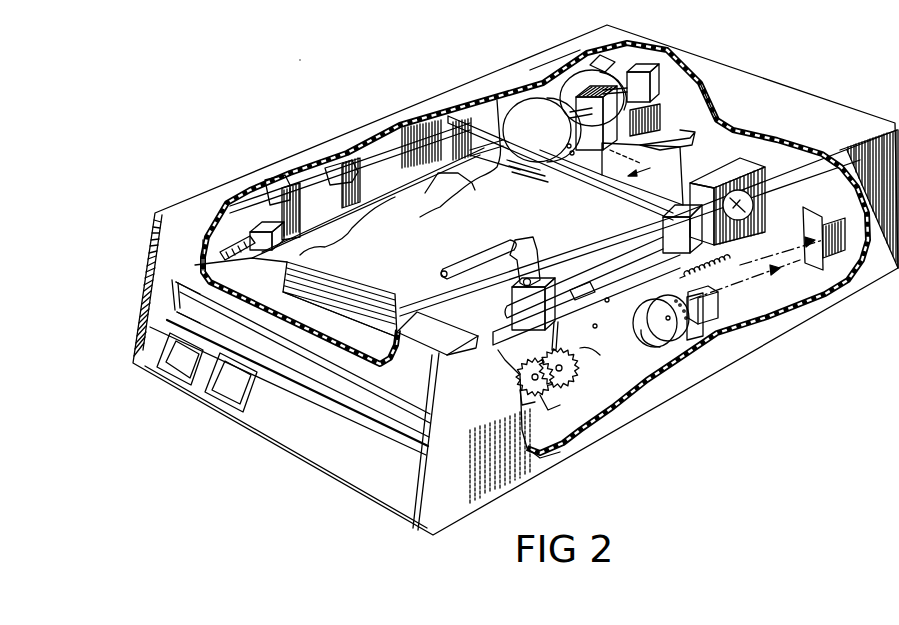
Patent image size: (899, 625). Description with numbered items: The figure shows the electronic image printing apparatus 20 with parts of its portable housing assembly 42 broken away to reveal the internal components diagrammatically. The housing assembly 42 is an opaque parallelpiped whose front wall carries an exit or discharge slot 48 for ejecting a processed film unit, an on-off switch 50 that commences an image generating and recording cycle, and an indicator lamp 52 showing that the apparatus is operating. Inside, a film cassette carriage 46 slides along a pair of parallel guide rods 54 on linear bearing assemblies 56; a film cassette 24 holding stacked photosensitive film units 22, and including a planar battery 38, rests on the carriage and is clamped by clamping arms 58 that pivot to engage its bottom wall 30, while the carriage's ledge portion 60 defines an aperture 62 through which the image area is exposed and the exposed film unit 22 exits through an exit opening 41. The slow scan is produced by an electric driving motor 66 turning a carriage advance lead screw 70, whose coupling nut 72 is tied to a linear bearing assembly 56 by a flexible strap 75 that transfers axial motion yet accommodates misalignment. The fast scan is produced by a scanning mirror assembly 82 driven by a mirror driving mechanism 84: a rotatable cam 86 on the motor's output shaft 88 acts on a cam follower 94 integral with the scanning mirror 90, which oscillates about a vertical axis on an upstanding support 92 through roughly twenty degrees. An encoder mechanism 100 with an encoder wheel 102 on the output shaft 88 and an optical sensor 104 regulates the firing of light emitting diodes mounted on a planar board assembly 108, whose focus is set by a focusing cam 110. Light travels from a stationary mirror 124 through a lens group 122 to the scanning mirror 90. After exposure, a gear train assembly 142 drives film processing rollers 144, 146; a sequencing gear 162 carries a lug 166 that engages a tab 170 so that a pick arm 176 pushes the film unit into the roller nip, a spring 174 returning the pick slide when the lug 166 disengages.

The electronic image printing apparatus 20 is at (318, 72).
The photosensitive film units 22 is at (407, 219).
The film cassette 24 is at (391, 276).
The bottom wall 30 is at (430, 305).
The battery 38 is at (492, 255).
The exit opening 41 is at (360, 333).
The portable housing assembly 42 is at (842, 88).
The film cassette carriage 46 is at (435, 128).
The exit or discharge slot 48 is at (326, 410).
The on-off switch 50 is at (178, 358).
The indicator lamp 52 is at (222, 390).
The guide rods 54 is at (617, 257).
The linear bearing assemblies 56 is at (420, 110).
The clamping arms 58 is at (525, 248).
The ledge portion 60 is at (232, 262).
The aperture 62 is at (320, 250).
The electric driving motor 66 is at (500, 143).
The carriage advance lead screw 70 is at (207, 245).
The coupling nut 72 is at (297, 220).
The flexible strap 75 is at (258, 215).
The scanning mirror assembly 82 is at (690, 106).
The mirror driving mechanism 84 is at (540, 58).
The rotatable cam 86 is at (535, 110).
The output shaft 88 is at (548, 135).
The scanning mirror 90 is at (686, 165).
The upstanding support 92 is at (680, 137).
The cam follower 94 is at (583, 162).
The encoder mechanism 100 is at (619, 60).
The encoder wheel 102 is at (600, 55).
The optical sensor 104 is at (650, 118).
The planar board assembly 108 is at (710, 315).
The focusing cam 110 is at (663, 345).
The lens group 122 is at (748, 165).
The stationary mirror 124 is at (797, 222).
The gear train assembly 142 is at (562, 428).
The film processing roller 144 is at (178, 288).
The film processing roller 146 is at (180, 311).
The sequencing gear 162 is at (560, 375).
The lug 166 is at (578, 362).
The tab 170 is at (565, 325).
The spring 174 is at (720, 272).
The pick arm 176 is at (618, 312).